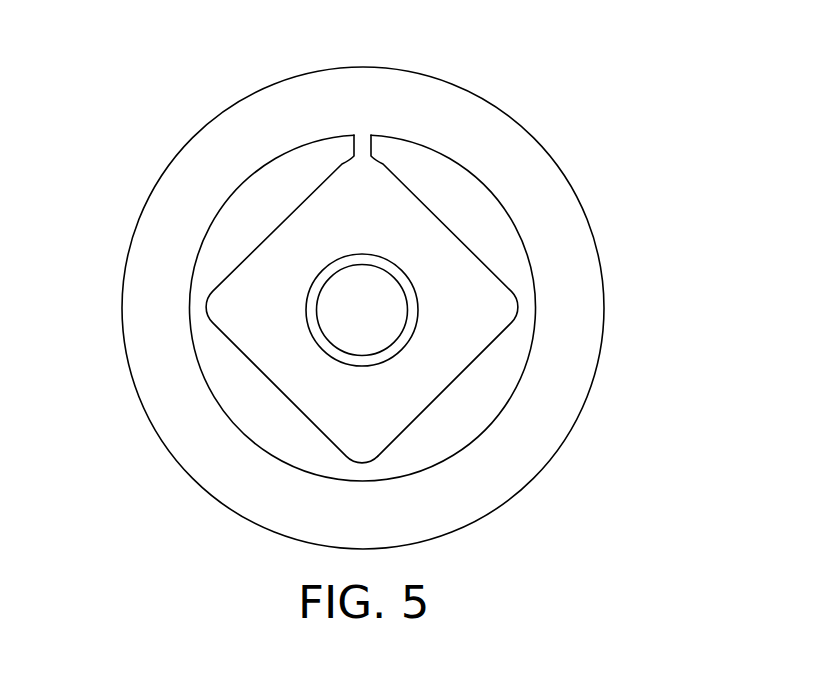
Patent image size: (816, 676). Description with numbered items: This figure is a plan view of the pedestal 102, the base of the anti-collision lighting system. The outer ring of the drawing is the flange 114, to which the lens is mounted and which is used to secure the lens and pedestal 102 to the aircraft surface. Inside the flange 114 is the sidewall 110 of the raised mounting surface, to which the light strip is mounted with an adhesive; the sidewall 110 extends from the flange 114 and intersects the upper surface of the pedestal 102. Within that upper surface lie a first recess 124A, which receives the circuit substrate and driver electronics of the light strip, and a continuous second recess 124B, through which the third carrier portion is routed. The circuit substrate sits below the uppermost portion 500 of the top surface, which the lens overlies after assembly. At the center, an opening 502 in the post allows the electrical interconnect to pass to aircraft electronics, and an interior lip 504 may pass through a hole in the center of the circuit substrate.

The pedestal 102 is at (560, 101).
The flange 114 is at (543, 173).
The sidewall 110 is at (192, 290).
The first recess 124A is at (293, 225).
The second recess 124B is at (362, 142).
The uppermost portion 500 is at (224, 392).
The opening 502 is at (397, 325).
The interior lip 504 is at (390, 358).